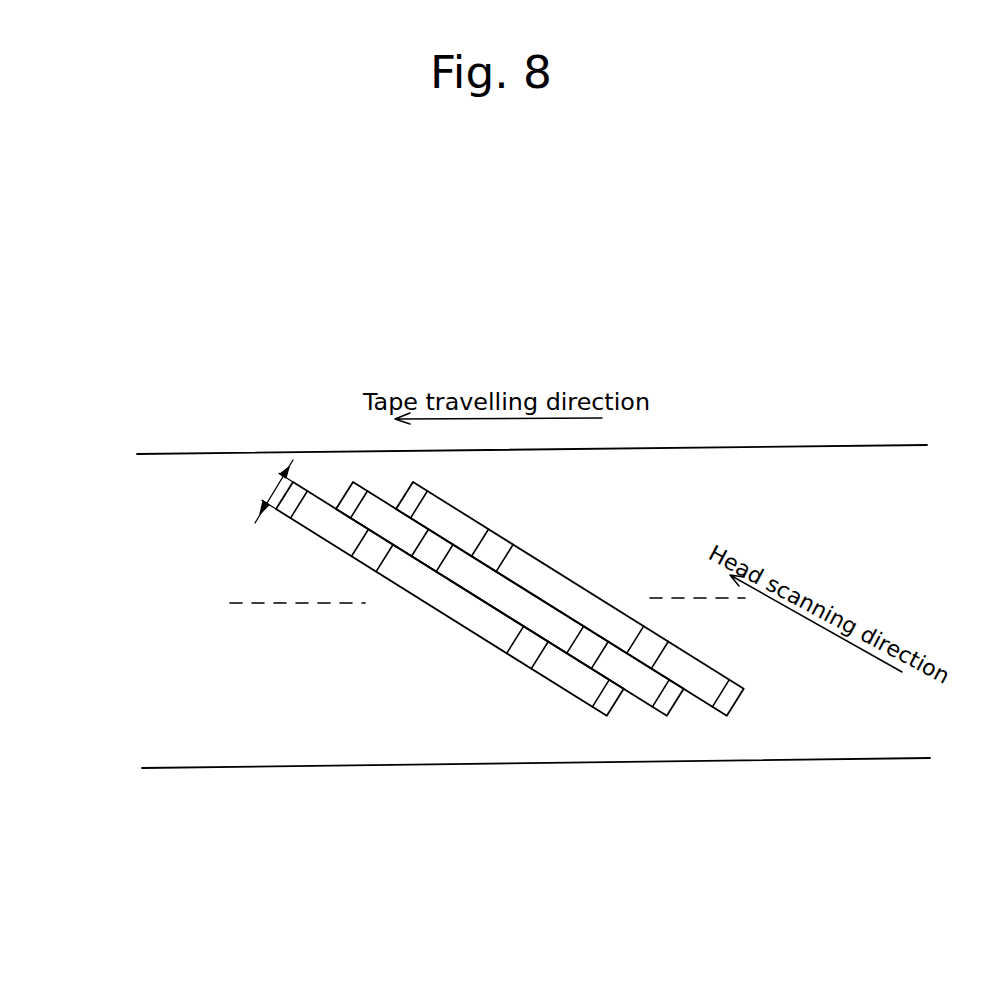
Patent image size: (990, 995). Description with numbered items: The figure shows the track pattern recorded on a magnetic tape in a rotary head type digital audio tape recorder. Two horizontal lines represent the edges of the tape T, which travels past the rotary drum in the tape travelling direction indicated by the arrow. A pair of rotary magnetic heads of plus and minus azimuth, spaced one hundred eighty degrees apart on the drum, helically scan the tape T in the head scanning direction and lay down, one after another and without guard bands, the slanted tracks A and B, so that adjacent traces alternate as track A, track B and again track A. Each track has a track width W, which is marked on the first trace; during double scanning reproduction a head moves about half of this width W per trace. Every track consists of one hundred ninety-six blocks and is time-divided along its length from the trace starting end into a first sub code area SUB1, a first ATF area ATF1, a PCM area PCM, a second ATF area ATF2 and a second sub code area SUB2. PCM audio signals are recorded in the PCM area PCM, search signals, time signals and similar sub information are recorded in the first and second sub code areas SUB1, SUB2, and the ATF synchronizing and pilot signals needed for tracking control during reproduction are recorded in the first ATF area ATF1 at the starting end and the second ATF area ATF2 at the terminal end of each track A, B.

The tape T is at (645, 448).
The track A is at (620, 707).
The track B is at (678, 703).
The second sub code area SUB2 is at (318, 532).
The second ATF area ATF2 is at (363, 560).
The PCM area PCM is at (445, 612).
The first ATF area ATF1 is at (518, 655).
The first sub code area SUB1 is at (558, 682).
The track width W is at (269, 491).